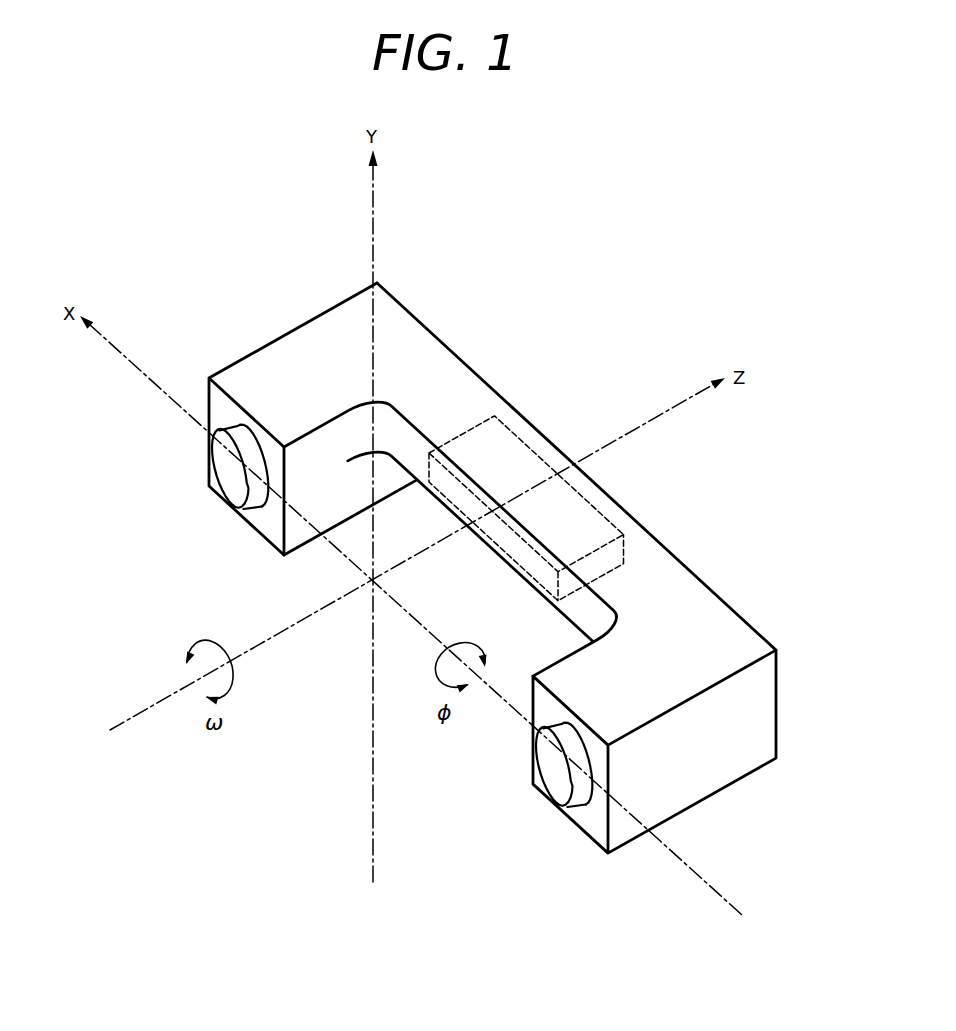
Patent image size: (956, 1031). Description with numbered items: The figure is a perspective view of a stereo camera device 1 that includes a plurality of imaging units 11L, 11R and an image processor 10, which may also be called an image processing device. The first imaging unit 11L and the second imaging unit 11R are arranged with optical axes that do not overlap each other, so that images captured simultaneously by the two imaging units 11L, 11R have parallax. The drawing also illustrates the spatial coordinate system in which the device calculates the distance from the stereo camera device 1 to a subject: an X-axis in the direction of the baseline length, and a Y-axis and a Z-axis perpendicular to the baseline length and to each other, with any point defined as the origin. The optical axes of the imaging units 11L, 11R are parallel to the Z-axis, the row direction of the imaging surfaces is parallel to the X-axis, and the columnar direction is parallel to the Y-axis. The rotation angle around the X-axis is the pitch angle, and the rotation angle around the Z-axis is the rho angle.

The stereo camera device 1 is at (589, 281).
The image processor 10 is at (502, 457).
The second imaging unit 11R is at (250, 370).
The first imaging unit 11L is at (657, 755).